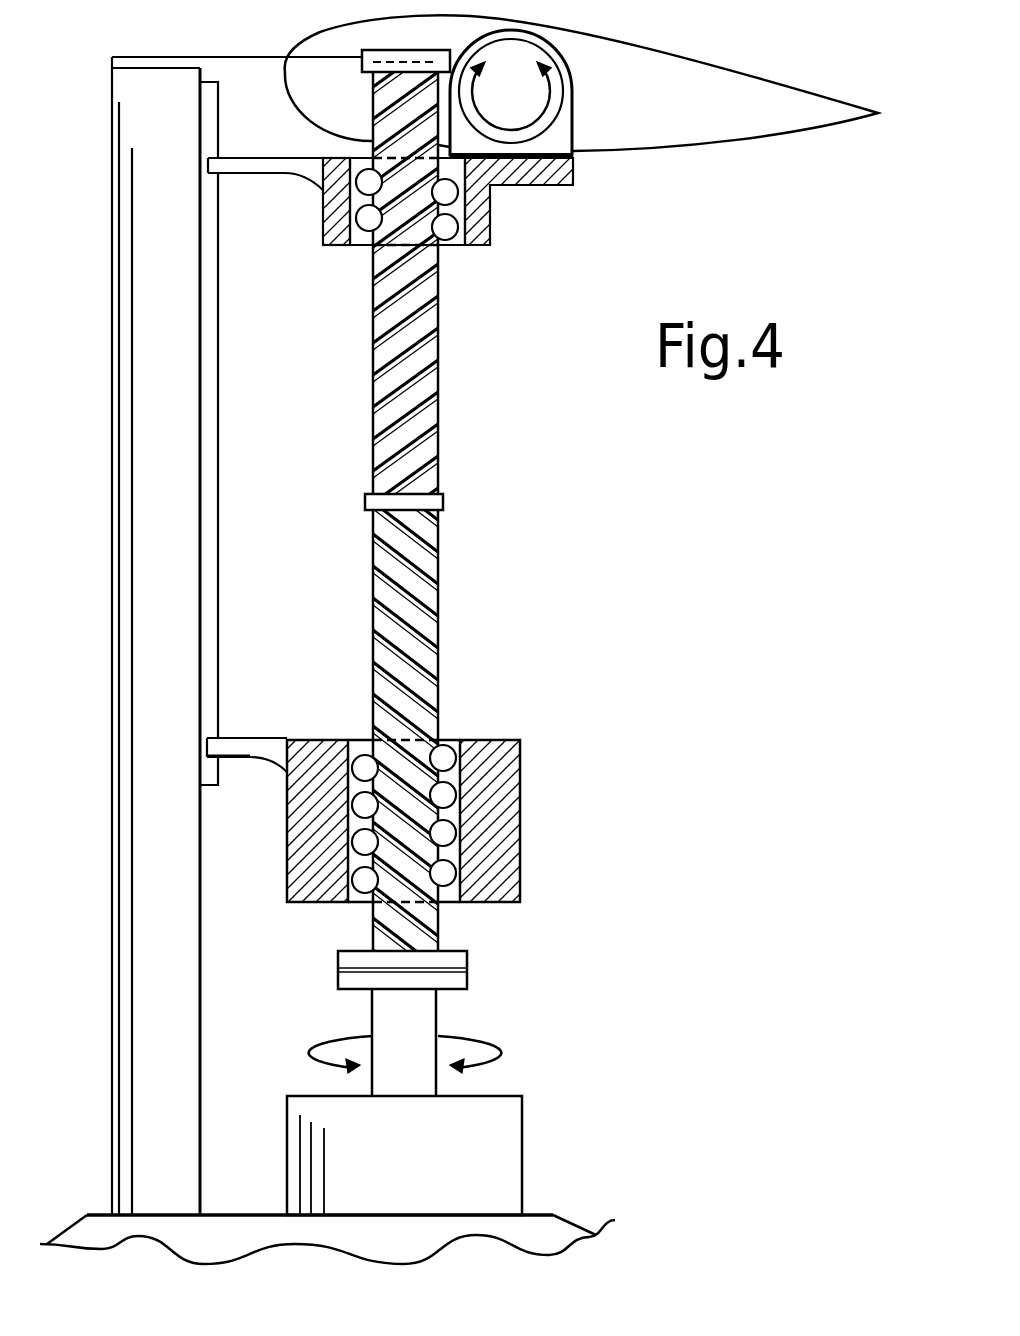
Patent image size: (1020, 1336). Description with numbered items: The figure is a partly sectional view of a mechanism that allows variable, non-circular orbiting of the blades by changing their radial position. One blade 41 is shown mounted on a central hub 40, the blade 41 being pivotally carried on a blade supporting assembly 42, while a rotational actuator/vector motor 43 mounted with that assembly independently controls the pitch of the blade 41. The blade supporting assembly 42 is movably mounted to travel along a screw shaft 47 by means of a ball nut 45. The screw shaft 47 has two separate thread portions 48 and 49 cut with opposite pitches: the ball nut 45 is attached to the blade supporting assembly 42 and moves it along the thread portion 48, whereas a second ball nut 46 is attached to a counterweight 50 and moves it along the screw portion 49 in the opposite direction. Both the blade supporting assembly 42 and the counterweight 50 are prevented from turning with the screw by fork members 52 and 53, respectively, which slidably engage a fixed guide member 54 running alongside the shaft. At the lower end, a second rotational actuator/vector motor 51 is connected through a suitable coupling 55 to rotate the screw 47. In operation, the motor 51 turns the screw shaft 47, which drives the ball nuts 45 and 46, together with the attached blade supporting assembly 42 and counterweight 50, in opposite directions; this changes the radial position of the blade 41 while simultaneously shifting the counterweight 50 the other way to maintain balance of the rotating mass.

The central hub 40 is at (549, 1216).
The blade 41 is at (648, 44).
The blade supporting assembly 42 is at (593, 97).
The rotational actuator/vector motor 43 is at (548, 58).
The ball nut 45 is at (456, 246).
The ball nut 46 is at (445, 740).
The screw shaft 47 is at (494, 498).
The thread portion 48 is at (440, 417).
The thread portion 49 is at (440, 600).
The counterweight 50 is at (547, 882).
The rotational actuator/vector motor 51 is at (524, 1096).
The fork member 52 is at (253, 178).
The fork member 53 is at (247, 738).
The fixed guide member 54 is at (218, 595).
The coupling 55 is at (469, 967).